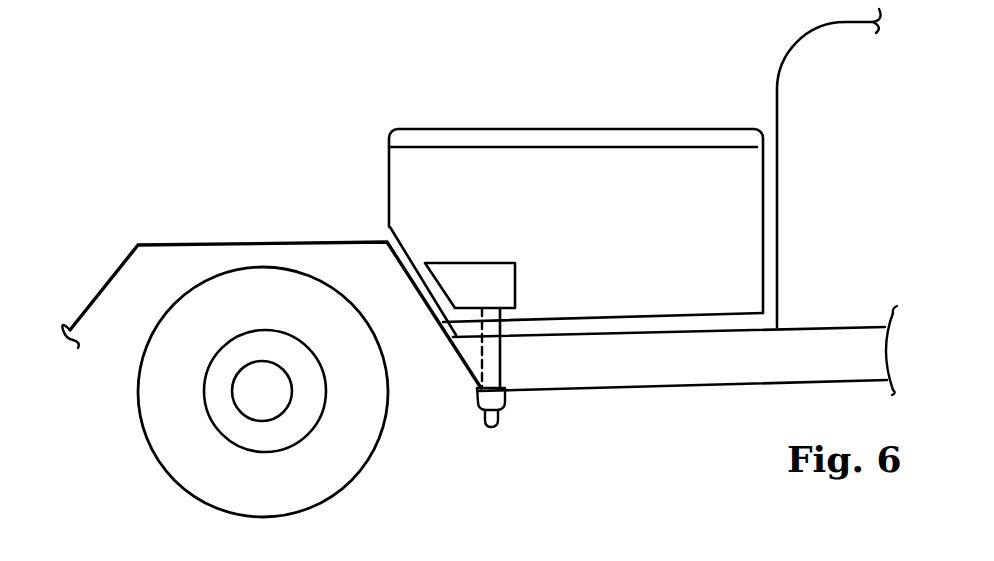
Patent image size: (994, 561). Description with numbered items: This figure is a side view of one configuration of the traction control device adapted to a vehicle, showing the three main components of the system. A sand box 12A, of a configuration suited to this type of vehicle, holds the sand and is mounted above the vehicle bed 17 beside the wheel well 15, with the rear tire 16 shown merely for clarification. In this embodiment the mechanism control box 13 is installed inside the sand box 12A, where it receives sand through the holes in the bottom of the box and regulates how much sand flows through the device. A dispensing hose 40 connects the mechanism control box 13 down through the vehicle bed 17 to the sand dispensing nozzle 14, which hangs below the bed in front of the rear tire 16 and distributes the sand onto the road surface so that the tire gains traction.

The sand box 12A is at (388, 183).
The mechanism control box 13 is at (515, 285).
The dispensing hose 40 is at (500, 360).
The sand dispensing nozzle 14 is at (505, 403).
The wheel well 15 is at (178, 243).
The rear tire 16 is at (138, 403).
The vehicle bed 17 is at (718, 386).